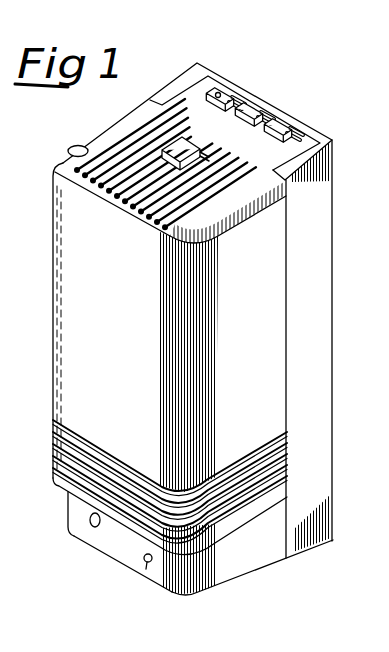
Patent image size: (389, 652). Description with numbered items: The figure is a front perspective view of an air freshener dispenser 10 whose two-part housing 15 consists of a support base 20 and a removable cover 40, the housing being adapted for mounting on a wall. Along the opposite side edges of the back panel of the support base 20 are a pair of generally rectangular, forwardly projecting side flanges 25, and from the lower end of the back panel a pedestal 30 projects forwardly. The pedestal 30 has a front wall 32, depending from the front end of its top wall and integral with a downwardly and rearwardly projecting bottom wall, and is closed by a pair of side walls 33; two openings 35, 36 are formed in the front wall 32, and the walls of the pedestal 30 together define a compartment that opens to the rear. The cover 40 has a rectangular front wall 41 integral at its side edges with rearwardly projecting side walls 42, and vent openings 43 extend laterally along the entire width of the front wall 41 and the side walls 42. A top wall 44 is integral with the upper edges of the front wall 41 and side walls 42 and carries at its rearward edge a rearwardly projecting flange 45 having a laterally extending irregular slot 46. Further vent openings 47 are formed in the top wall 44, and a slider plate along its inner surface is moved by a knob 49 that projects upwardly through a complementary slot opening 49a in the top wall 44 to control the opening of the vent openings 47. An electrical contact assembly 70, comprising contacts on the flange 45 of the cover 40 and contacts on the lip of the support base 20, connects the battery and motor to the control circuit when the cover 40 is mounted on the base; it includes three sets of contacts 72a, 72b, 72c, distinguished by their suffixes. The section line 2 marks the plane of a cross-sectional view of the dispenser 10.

The section line 2- 2 is at (189, 50).
The air freshener dispenser 10 is at (68, 118).
The two-part housing 15 is at (97, 578).
The support base 20 is at (336, 418).
The side flanges 25 is at (163, 88).
The pedestal 30 is at (291, 553).
The front wall 32 is at (105, 553).
The side walls 33 is at (250, 565).
The opening 35 is at (89, 526).
The opening 36 is at (145, 562).
The removable cover 40 is at (53, 253).
The front wall 41 is at (54, 323).
The side walls 42 is at (288, 290).
The vent openings 43 is at (56, 457).
The top wall 44 is at (113, 126).
The rearwardly projecting flange 45 is at (307, 133).
The irregular slot 46 is at (223, 88).
The vent openings 47 is at (67, 152).
The knob 49 is at (186, 142).
The slot opening 49a is at (201, 152).
The electrical contact assembly 70 is at (213, 71).
The contact set 72a is at (290, 124).
The contact set 72b is at (264, 108).
The contact set 72c is at (236, 96).